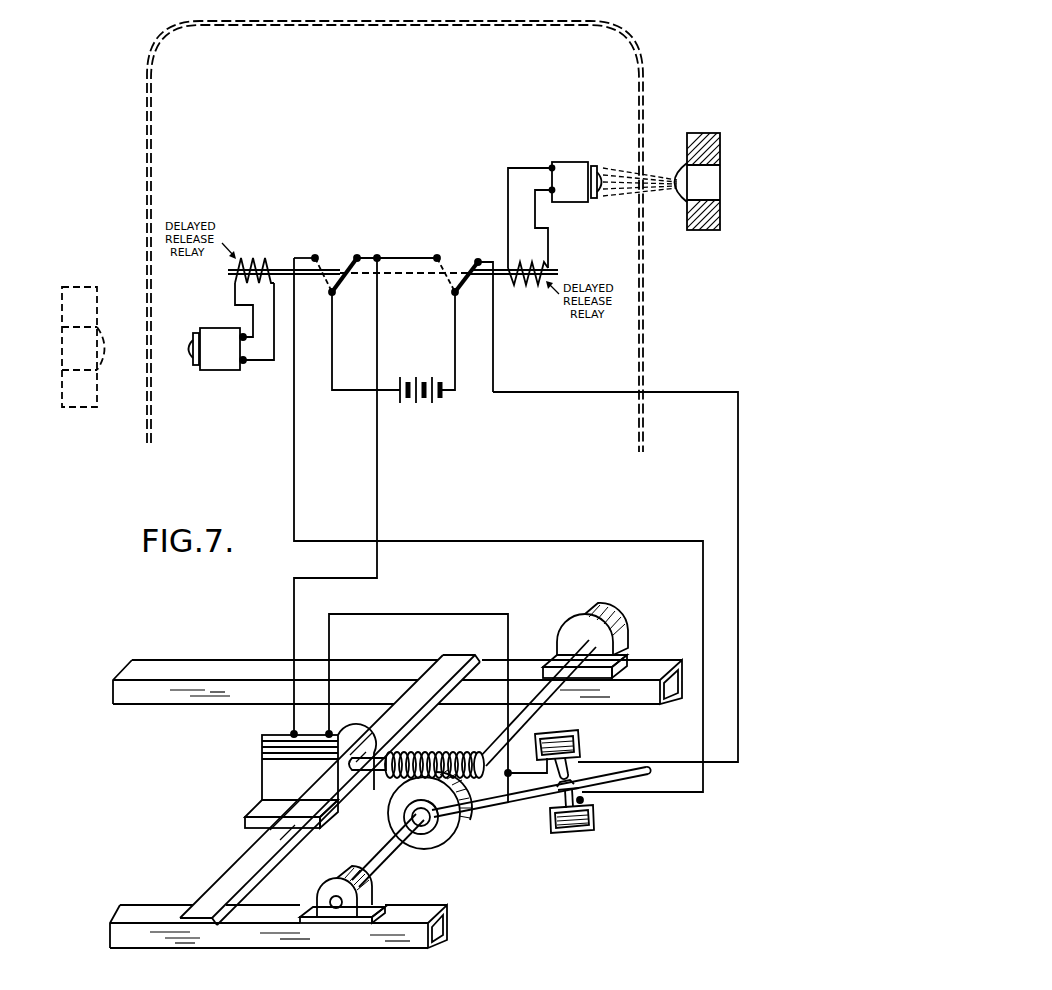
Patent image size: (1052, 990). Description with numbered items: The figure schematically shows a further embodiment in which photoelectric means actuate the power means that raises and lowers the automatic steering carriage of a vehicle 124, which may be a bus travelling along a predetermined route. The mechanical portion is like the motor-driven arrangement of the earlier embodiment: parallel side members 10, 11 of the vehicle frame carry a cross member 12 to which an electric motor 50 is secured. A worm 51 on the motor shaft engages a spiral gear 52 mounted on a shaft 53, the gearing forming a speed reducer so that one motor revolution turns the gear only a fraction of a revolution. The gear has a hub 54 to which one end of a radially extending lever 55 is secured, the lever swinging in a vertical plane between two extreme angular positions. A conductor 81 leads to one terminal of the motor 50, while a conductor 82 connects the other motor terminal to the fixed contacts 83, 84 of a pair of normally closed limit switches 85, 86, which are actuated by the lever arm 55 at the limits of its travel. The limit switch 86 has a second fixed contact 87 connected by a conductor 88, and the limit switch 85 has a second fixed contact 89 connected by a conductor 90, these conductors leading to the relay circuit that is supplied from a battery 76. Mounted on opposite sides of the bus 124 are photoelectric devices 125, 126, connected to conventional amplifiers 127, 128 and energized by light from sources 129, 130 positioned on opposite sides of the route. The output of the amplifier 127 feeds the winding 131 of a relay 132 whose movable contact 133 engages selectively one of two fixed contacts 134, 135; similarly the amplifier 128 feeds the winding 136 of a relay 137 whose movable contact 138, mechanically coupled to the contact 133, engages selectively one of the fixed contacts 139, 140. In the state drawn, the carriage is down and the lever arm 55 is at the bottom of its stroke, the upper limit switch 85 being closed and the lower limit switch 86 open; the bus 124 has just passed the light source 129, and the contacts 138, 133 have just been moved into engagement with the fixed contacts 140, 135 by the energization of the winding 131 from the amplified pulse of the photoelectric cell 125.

The side member 10 is at (152, 910).
The side member 11 is at (198, 660).
The cross member 12 is at (240, 862).
The electric motor 50 is at (268, 772).
The worm 51 is at (433, 752).
The spiral gear 52 is at (395, 820).
The shaft 53 is at (385, 850).
The hub 54 is at (426, 832).
The lever 55 is at (495, 806).
The battery 76 is at (426, 404).
The conductor 81 is at (377, 470).
The conductor 82 is at (441, 614).
The fixed contact 83 is at (546, 762).
The fixed contact 84 is at (553, 803).
The limit switch 85 is at (581, 732).
The limit switch 86 is at (577, 836).
The second fixed contact 87 is at (583, 800).
The conductor 88 is at (517, 541).
The second fixed contact 89 is at (579, 762).
The conductor 90 is at (571, 393).
The vehicle 124 is at (147, 100).
The photoelectric device 125 is at (600, 166).
The photoelectric device 126 is at (193, 366).
The amplifier 127 is at (567, 162).
The amplifier 128 is at (218, 371).
The light source 129 is at (720, 182).
The light source 130 is at (75, 350).
The winding 131 is at (530, 266).
The relay 132 is at (530, 292).
The movable contact 133 is at (463, 262).
The fixed contact 134 is at (435, 257).
The fixed contact 135 is at (478, 260).
The winding 136 is at (240, 282).
The relay 137 is at (250, 254).
The movable contact 138 is at (346, 264).
The fixed contact 139 is at (313, 256).
The fixed contact 140 is at (358, 256).